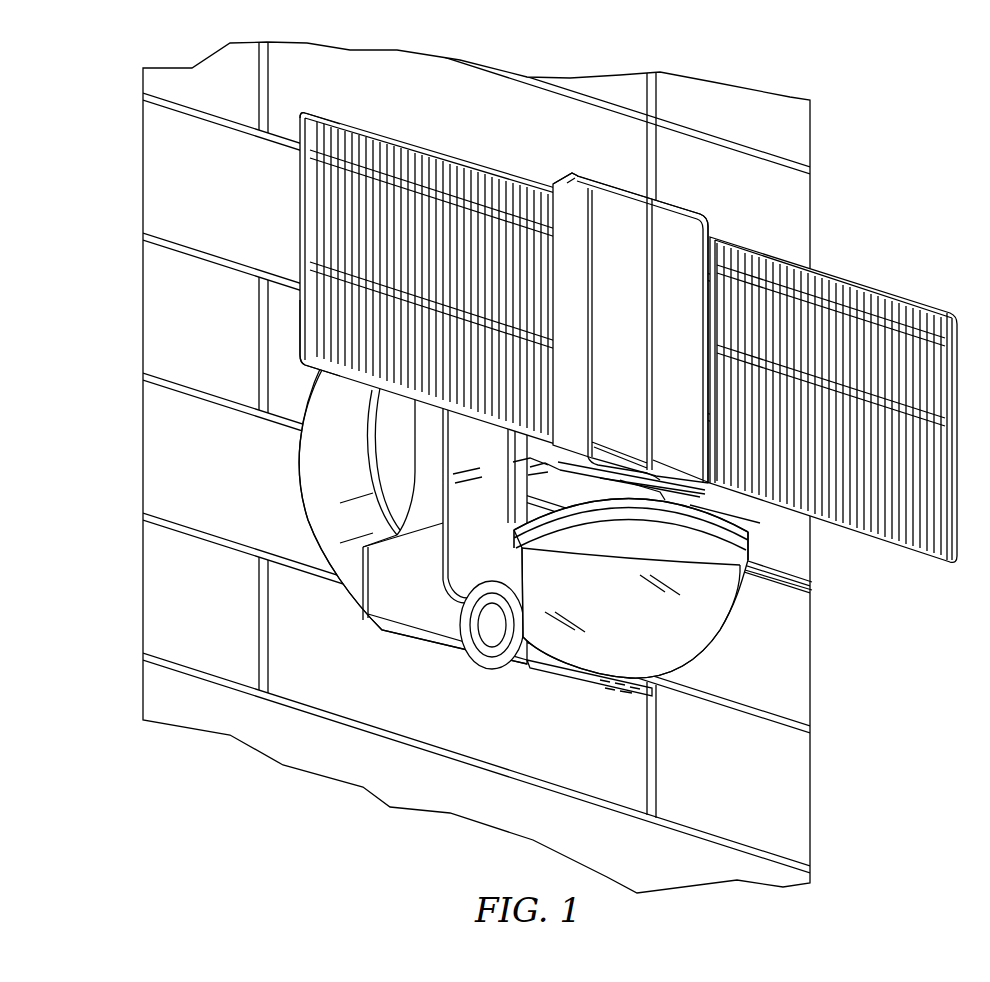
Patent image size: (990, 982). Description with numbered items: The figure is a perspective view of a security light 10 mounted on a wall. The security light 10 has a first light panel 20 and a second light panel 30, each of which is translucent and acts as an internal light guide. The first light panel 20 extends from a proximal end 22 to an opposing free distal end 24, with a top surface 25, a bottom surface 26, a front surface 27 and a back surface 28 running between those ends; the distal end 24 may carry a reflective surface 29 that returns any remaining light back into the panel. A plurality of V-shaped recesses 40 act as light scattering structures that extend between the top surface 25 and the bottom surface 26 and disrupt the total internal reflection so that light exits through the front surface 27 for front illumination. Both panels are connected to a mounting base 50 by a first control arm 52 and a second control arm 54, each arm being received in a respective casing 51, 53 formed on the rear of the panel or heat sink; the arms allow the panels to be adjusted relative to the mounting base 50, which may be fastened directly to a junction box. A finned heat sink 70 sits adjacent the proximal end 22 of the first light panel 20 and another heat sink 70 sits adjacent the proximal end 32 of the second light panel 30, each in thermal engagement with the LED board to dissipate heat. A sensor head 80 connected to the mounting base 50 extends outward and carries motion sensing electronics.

The security light 10 is at (780, 230).
The first light panel 20 is at (567, 279).
The proximal end 22 is at (556, 180).
The distal end 24 is at (290, 183).
The top surface 25 is at (337, 113).
The bottom surface 26 is at (327, 373).
The front surface 27 is at (352, 380).
The back surface 28 is at (300, 318).
The reflective surface 29 is at (540, 232).
The second light panel 30 is at (836, 361).
The proximal end 32 is at (720, 235).
The V-shaped recesses 40 is at (413, 160).
The mounting base 50 is at (333, 525).
The casing 51 is at (596, 452).
The first control arm 52 is at (480, 523).
The casing 53 is at (668, 470).
The second control arm 54 is at (633, 490).
The heat sink 70 is at (543, 460).
The sensor head 80 is at (712, 624).